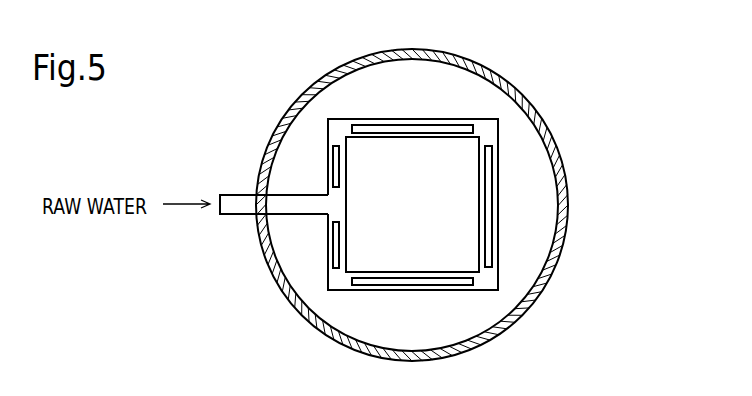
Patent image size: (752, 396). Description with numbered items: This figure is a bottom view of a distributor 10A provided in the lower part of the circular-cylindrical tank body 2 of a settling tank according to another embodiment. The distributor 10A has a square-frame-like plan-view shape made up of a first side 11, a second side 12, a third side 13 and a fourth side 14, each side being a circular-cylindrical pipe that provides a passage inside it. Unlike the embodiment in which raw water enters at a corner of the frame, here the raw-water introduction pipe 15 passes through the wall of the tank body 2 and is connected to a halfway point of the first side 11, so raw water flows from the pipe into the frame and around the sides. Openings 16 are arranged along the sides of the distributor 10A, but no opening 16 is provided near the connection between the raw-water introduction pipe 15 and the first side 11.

The tank body 2 is at (558, 232).
The distributor 10A is at (518, 177).
The first side 11 is at (346, 183).
The second side 12 is at (388, 124).
The third side 13 is at (480, 210).
The fourth side 14 is at (397, 272).
The raw-water introduction pipe 15 is at (230, 215).
The opening 16 is at (333, 172).